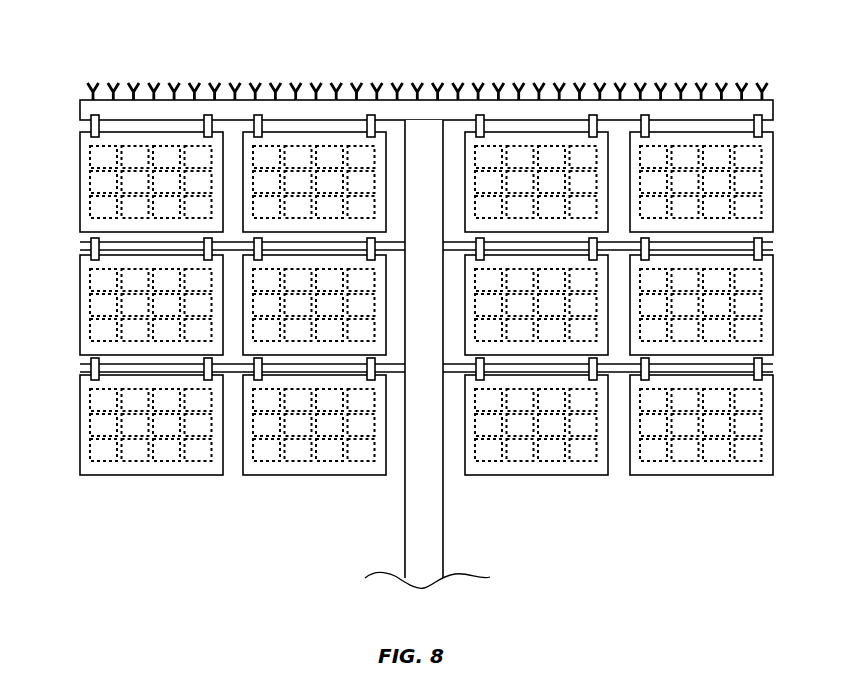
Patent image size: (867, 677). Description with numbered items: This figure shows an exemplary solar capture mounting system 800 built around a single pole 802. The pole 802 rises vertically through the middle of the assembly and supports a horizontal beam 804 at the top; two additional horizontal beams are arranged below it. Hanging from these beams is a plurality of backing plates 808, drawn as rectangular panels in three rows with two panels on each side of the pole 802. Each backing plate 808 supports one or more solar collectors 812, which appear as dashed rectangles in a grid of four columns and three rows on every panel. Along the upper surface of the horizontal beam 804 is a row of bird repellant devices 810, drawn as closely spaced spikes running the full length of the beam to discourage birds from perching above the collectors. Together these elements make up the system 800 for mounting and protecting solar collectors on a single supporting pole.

The solar capture mounting system 800 is at (80, 46).
The single pole 802 is at (405, 557).
The horizontal beam 804 is at (690, 99).
The backing plate 808 is at (195, 476).
The bird repellant device 810 is at (541, 85).
The solar collector 812 is at (115, 461).